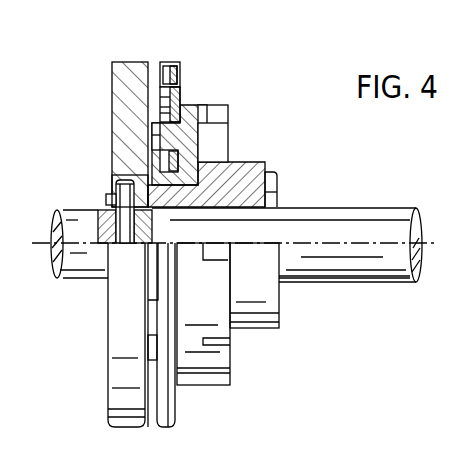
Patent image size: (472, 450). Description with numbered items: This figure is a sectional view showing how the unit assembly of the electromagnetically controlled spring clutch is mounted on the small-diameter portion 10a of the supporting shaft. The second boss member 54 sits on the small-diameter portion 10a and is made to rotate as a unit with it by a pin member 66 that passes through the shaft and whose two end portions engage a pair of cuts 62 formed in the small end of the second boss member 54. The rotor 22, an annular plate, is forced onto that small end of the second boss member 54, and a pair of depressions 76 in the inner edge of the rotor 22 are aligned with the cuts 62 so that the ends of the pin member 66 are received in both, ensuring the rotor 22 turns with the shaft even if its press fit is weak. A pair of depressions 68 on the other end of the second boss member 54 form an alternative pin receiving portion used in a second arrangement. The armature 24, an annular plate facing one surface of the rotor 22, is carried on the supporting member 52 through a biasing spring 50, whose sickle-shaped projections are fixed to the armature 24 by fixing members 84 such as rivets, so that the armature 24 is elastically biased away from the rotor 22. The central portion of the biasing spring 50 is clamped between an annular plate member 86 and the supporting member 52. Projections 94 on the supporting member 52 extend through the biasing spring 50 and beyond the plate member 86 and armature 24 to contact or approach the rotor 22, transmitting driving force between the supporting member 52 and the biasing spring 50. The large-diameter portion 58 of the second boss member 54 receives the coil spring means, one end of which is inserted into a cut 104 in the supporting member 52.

The small-diameter portion 10a is at (349, 278).
The rotor 22 is at (104, 378).
The armature 24 is at (163, 90).
The biasing spring 50 is at (184, 98).
The supporting member 52 is at (198, 374).
The second boss member 54 is at (253, 332).
The large-diameter portion 58 is at (236, 162).
The cuts 62 is at (107, 197).
The pin member 66 is at (97, 235).
The depressions 68 is at (279, 191).
The depressions 76 is at (111, 174).
The fixing members 84 is at (170, 60).
The plate member 86 is at (160, 157).
The projections 94 is at (151, 135).
The cut 104 is at (217, 108).